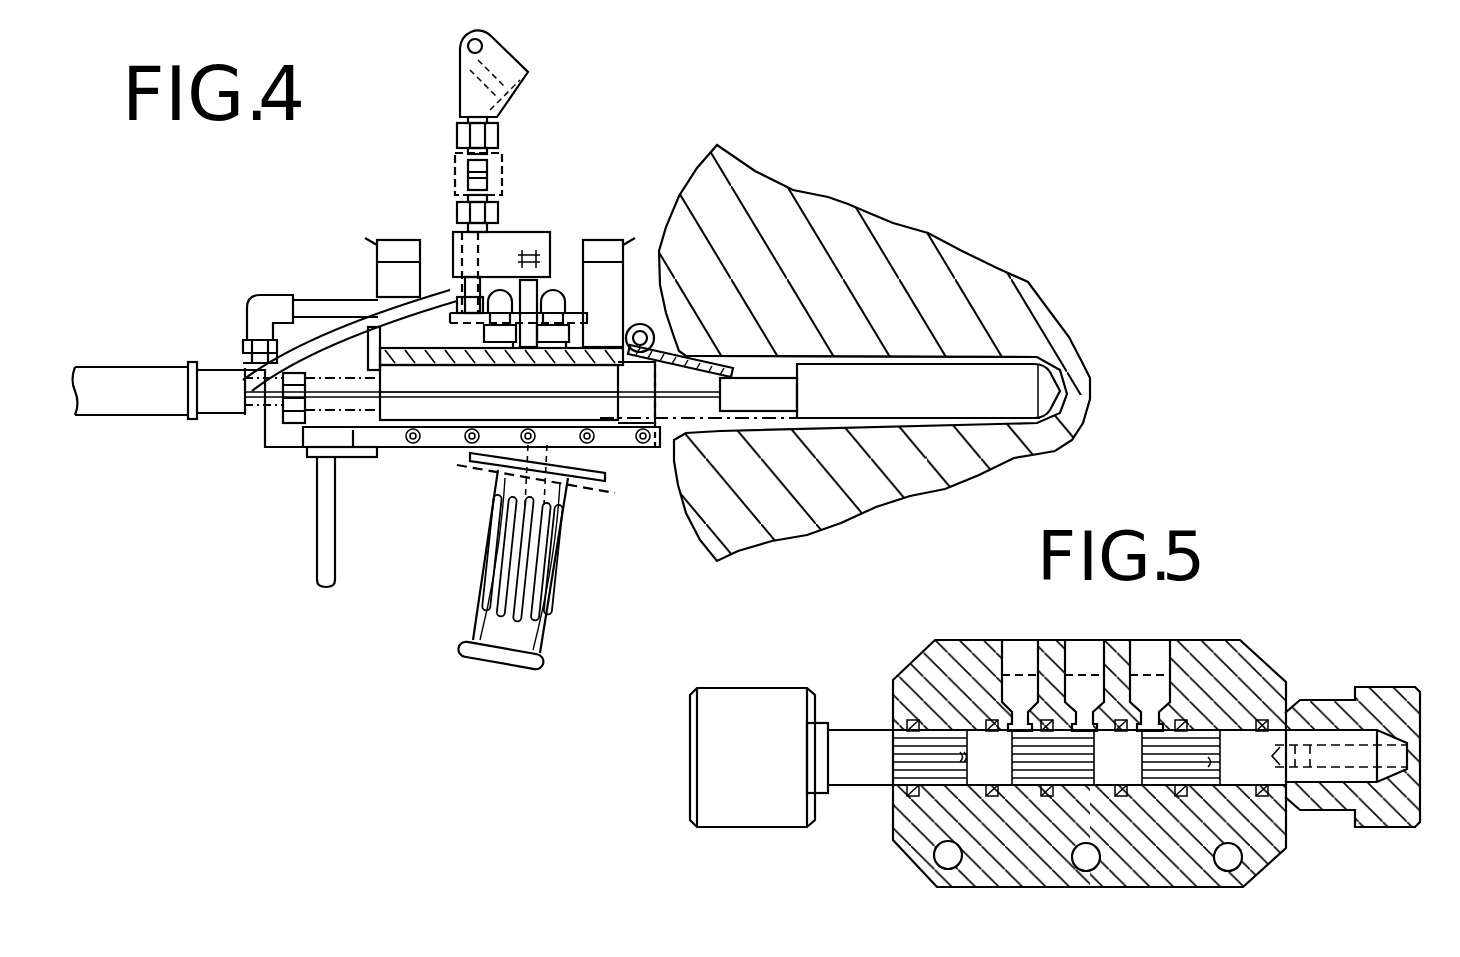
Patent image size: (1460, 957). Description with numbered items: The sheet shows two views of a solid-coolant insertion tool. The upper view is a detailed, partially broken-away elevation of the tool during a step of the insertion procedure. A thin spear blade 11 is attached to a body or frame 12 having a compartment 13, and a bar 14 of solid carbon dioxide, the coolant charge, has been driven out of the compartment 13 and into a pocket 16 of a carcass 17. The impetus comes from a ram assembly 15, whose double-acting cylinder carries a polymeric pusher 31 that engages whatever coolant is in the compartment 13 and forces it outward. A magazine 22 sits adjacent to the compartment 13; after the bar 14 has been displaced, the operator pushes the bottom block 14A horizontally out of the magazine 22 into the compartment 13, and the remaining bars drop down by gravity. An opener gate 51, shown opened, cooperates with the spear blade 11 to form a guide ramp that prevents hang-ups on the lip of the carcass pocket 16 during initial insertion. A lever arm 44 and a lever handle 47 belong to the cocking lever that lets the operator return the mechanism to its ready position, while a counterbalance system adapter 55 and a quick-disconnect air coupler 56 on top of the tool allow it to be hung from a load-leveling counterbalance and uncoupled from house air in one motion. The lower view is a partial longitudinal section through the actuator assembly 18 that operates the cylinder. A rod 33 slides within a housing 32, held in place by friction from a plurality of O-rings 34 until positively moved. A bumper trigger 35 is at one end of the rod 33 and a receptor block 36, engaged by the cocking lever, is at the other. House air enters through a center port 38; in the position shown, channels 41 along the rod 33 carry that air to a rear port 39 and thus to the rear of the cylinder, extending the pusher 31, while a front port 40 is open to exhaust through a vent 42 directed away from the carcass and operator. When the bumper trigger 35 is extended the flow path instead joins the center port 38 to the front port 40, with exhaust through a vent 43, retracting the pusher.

In FIG. 4, the spear blade 11 is at (760, 432).
In FIG. 4, the body or frame 12 is at (363, 357).
In FIG. 4, the compartment 13 is at (636, 415).
In FIG. 4, the bar of solid carbon dioxide 14 is at (937, 406).
In FIG. 4, the bottom solid coolant bar 14A is at (440, 405).
In FIG. 4, the ram assembly 15 is at (140, 408).
In FIG. 4, the pocket 16 is at (782, 366).
In FIG. 4, the carcass 17 is at (975, 470).
In FIG. 5, the actuator assembly 18 is at (1292, 630).
In FIG. 4, the magazine 22 is at (402, 238).
In FIG. 4, the pusher 31 is at (322, 408).
In FIG. 5, the housing 32 is at (1255, 845).
In FIG. 5, the rod 33 is at (855, 775).
In FIG. 5, the O-rings 34 is at (1003, 798).
In FIG. 5, the bumper trigger 35 is at (1388, 700).
In FIG. 5, the receptor block 36 is at (750, 718).
In FIG. 5, the center port 38 is at (1082, 652).
In FIG. 5, the rear port 39 is at (1015, 650).
In FIG. 5, the front port 40 is at (1150, 650).
In FIG. 5, the channels 41 is at (1078, 760).
In FIG. 5, the vent 42 is at (1208, 760).
In FIG. 5, the vent 43 is at (962, 756).
In FIG. 4, the lever arm 44 is at (340, 458).
In FIG. 4, the lever handle 47 is at (317, 557).
In FIG. 4, the opener gate 51 is at (700, 358).
In FIG. 4, the counterbalance system adapter 55 is at (462, 62).
In FIG. 4, the quick-disconnect air coupler 56 is at (505, 185).